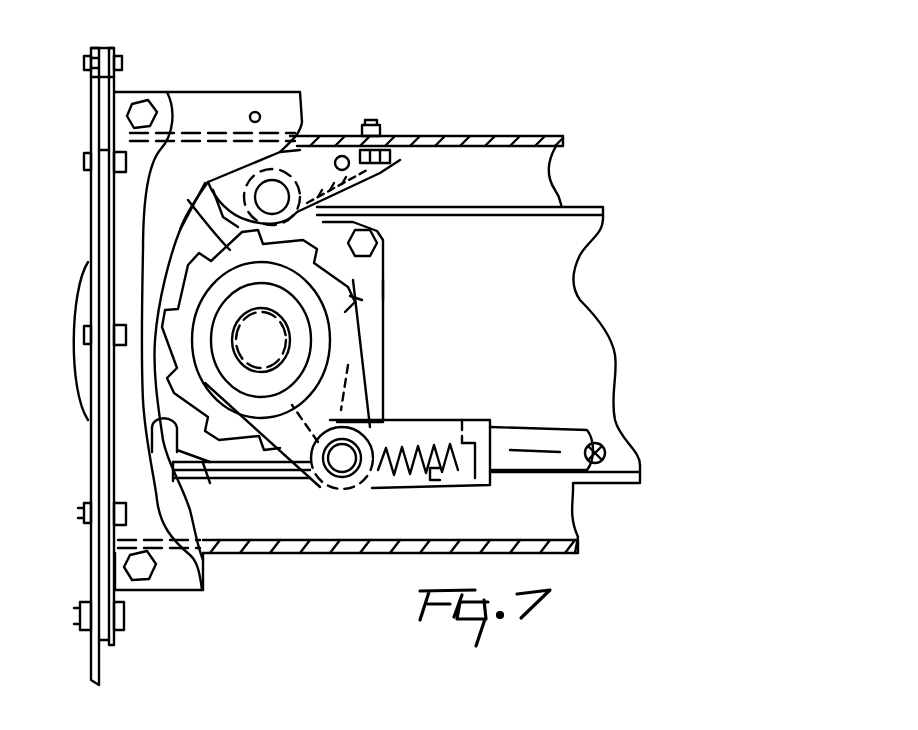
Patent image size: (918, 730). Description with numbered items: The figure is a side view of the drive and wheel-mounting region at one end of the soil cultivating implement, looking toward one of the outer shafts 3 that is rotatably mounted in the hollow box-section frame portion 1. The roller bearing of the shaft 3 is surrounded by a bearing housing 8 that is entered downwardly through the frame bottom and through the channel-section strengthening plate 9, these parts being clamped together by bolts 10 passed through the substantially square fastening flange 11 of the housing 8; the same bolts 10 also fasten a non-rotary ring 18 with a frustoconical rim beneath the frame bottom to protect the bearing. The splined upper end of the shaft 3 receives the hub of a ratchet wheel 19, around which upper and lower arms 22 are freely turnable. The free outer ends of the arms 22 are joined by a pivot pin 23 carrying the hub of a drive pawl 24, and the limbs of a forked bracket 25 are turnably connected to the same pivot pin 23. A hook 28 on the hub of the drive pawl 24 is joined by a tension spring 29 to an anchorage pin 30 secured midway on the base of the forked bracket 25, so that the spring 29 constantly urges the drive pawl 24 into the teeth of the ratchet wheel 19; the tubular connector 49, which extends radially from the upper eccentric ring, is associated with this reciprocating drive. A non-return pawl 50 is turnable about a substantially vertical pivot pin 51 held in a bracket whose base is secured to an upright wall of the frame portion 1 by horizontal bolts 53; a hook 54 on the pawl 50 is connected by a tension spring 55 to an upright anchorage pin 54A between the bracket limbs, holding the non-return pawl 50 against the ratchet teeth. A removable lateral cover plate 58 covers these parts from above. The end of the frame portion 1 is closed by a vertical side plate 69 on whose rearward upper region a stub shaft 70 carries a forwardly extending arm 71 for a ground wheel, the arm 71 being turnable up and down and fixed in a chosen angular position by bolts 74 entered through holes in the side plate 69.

The hollow box-section frame portion 1 is at (524, 126).
The shaft 3 is at (250, 325).
The bearing housing 8 is at (363, 322).
The strengthening plate 9 is at (562, 262).
The bolts 10 is at (368, 242).
The fastening flange 11 is at (380, 283).
The ring 18 is at (82, 282).
The ratchet wheel 19 is at (350, 300).
The arms 22 is at (337, 363).
The pivot pin 23 is at (333, 467).
The drive pawl 24 is at (363, 390).
The forked bracket 25 is at (452, 410).
The hook 28 is at (372, 492).
The tension spring 29 is at (441, 485).
The anchorage pin 30 is at (468, 412).
The tubular connector 49 is at (572, 408).
The non-return pawl 50 is at (188, 200).
The pivot pin 51 is at (275, 187).
The bolts 53 is at (335, 148).
The hook 54 is at (372, 122).
The anchorage pin 54A is at (397, 163).
The tension spring 55 is at (378, 181).
The lateral cover plate 58 is at (157, 93).
The side plate 69 is at (100, 198).
The stub shaft 70 is at (120, 55).
The arm 71 is at (90, 668).
The bolts 74 is at (108, 623).